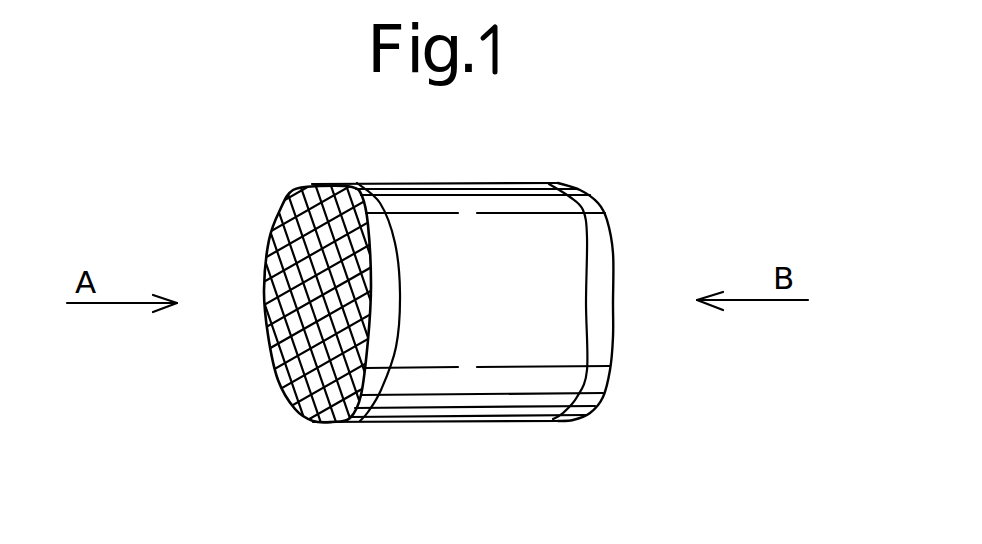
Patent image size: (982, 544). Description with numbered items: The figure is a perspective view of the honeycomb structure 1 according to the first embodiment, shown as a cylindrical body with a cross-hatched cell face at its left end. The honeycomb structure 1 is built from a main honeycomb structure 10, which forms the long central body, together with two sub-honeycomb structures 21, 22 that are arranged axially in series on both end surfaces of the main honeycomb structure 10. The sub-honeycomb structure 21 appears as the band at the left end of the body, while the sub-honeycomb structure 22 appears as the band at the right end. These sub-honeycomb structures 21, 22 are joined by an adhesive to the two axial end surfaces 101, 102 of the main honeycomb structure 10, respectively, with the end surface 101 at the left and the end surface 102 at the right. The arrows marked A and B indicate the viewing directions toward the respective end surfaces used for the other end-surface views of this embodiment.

The honeycomb structure 1 is at (563, 158).
The main honeycomb structure 10 is at (483, 223).
The sub-honeycomb structure 21 is at (365, 227).
The sub-honeycomb structure 22 is at (593, 233).
The axial end surface 101 is at (263, 325).
The axial end surface 102 is at (618, 332).